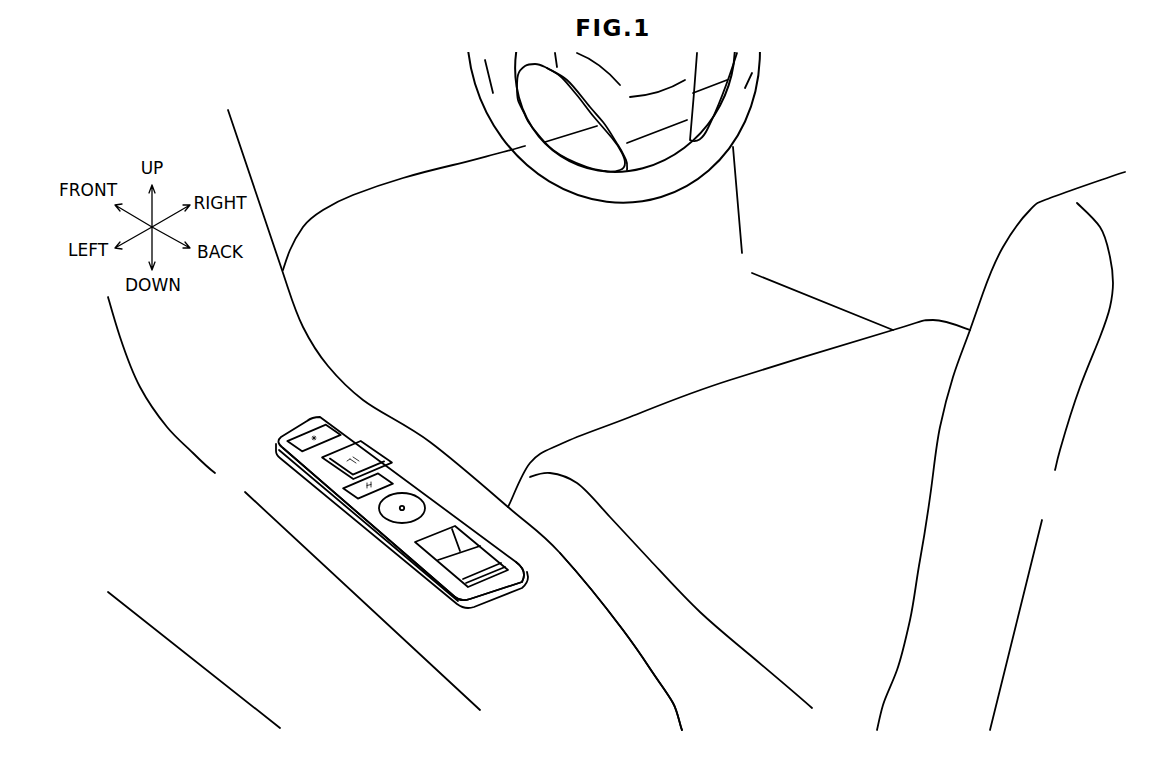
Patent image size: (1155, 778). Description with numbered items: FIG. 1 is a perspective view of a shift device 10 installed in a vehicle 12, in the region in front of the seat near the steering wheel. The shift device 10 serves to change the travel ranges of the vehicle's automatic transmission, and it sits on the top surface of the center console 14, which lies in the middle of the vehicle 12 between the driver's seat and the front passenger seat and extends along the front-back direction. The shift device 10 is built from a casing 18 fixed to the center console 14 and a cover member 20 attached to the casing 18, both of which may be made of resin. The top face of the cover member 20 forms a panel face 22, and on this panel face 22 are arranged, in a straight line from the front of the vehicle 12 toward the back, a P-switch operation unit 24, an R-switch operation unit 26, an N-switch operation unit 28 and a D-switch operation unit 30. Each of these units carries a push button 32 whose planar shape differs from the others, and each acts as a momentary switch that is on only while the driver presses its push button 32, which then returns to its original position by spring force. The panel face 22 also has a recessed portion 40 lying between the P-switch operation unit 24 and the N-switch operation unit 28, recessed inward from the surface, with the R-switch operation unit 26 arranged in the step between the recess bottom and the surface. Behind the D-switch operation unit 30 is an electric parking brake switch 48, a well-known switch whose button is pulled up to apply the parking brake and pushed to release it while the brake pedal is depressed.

The shift device 10 is at (447, 497).
The vehicle 12 is at (882, 155).
The center console 14 is at (480, 622).
The casing 18 is at (432, 573).
The cover member 20 is at (498, 580).
The panel face 22 is at (412, 528).
The P-switch operation unit 24 is at (333, 422).
The R-switch operation unit 26 is at (357, 453).
The N-switch operation unit 28 is at (395, 468).
The D-switch operation unit 30 is at (418, 494).
The push button 32 is at (305, 439).
The recessed portion 40 is at (300, 453).
The electric parking brake switch 48 is at (480, 560).